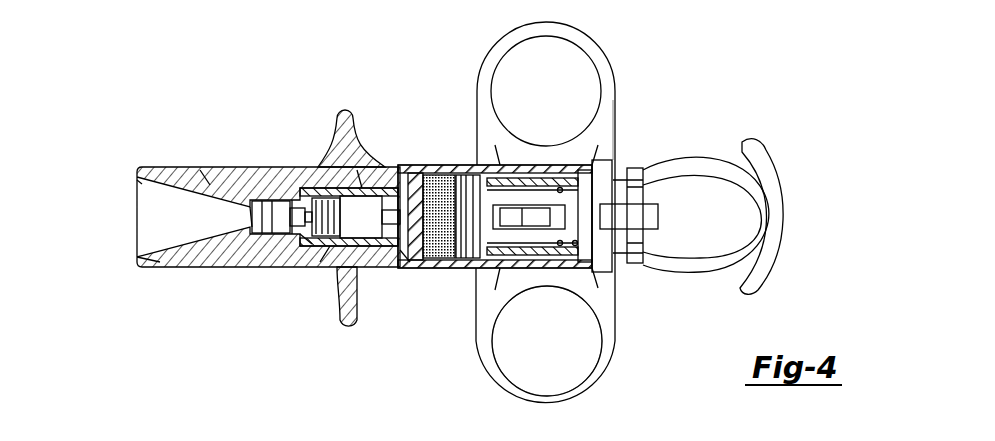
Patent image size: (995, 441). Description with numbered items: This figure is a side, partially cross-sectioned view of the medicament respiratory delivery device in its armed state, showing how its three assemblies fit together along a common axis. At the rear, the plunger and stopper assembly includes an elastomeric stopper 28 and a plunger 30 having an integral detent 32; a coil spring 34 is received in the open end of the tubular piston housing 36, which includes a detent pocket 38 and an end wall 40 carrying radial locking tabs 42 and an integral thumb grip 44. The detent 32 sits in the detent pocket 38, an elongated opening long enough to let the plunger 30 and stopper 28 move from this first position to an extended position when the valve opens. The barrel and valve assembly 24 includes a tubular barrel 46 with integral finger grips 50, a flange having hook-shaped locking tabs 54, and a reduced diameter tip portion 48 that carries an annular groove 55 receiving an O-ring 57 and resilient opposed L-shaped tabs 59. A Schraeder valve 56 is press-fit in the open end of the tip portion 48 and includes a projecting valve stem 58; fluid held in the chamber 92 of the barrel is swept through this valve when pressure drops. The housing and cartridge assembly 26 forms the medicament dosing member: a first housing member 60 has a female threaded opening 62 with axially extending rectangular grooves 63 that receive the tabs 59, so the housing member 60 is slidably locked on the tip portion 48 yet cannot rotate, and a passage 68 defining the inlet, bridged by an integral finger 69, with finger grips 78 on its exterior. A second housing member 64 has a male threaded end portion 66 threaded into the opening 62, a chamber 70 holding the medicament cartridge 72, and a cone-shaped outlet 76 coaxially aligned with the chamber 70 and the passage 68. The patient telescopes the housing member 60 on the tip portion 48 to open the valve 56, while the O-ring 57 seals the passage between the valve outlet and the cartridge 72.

The barrel and valve assembly 24 is at (688, 112).
The housing and cartridge assembly 26 is at (155, 128).
The elastomeric stopper 28 is at (470, 170).
The plunger 30 is at (546, 216).
The detent 32 is at (552, 215).
The coil spring 34 is at (605, 275).
The tubular piston housing 36 is at (551, 262).
The detent pocket 38 is at (566, 262).
The end wall 40 is at (633, 175).
The radial locking tabs 42 is at (638, 193).
The thumb grip 44 is at (700, 160).
The tubular barrel 46 is at (406, 270).
The reduced diameter tip portion 48 is at (398, 170).
The finger grips 50 is at (612, 345).
The hook-shaped locking tabs 54 is at (652, 222).
The annular groove 55 is at (332, 170).
The Schraeder valve 56 is at (384, 262).
The O-ring 57 is at (322, 275).
The valve stem 58 is at (294, 172).
The L-shaped tabs 59 is at (357, 170).
The first housing member 60 is at (270, 262).
The female threaded opening 62 is at (280, 190).
The rectangular grooves 63 is at (361, 217).
The second housing member 64 is at (172, 268).
The male threaded end portion 66 is at (262, 195).
The passage 68 is at (292, 258).
The finger 69 is at (278, 167).
The chamber 70 is at (256, 255).
The medicament cartridge 72 is at (220, 168).
The cone-shaped outlet 76 is at (140, 252).
The finger grips 78 is at (350, 330).
The chamber 92 is at (436, 262).